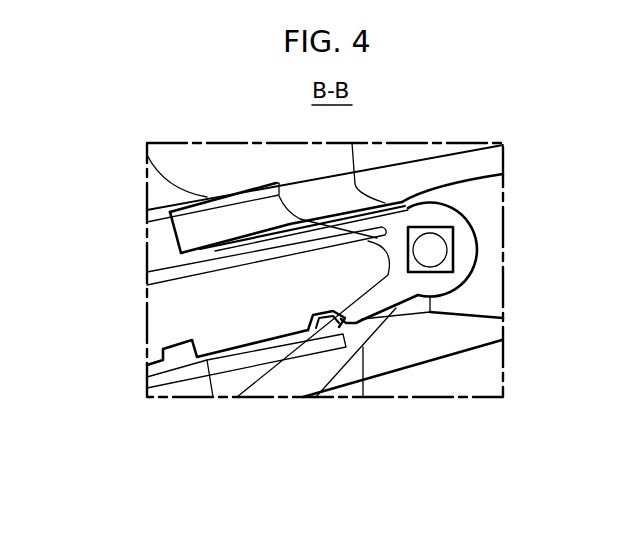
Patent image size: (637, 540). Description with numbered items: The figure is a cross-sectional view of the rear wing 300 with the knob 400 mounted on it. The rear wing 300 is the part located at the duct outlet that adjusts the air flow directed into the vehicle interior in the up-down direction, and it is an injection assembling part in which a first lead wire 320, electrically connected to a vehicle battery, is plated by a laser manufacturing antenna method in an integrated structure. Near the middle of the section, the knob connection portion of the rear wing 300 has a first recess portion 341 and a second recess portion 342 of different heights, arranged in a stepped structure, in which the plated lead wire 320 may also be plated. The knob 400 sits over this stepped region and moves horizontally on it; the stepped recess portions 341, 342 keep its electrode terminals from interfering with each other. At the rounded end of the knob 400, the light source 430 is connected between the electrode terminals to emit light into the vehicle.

The rear wing 300 is at (210, 315).
The first lead wire 320 is at (332, 320).
The first recess portion 341 is at (310, 328).
The second recess portion 342 is at (190, 343).
The knob 400 is at (456, 363).
The light source 430 is at (430, 248).